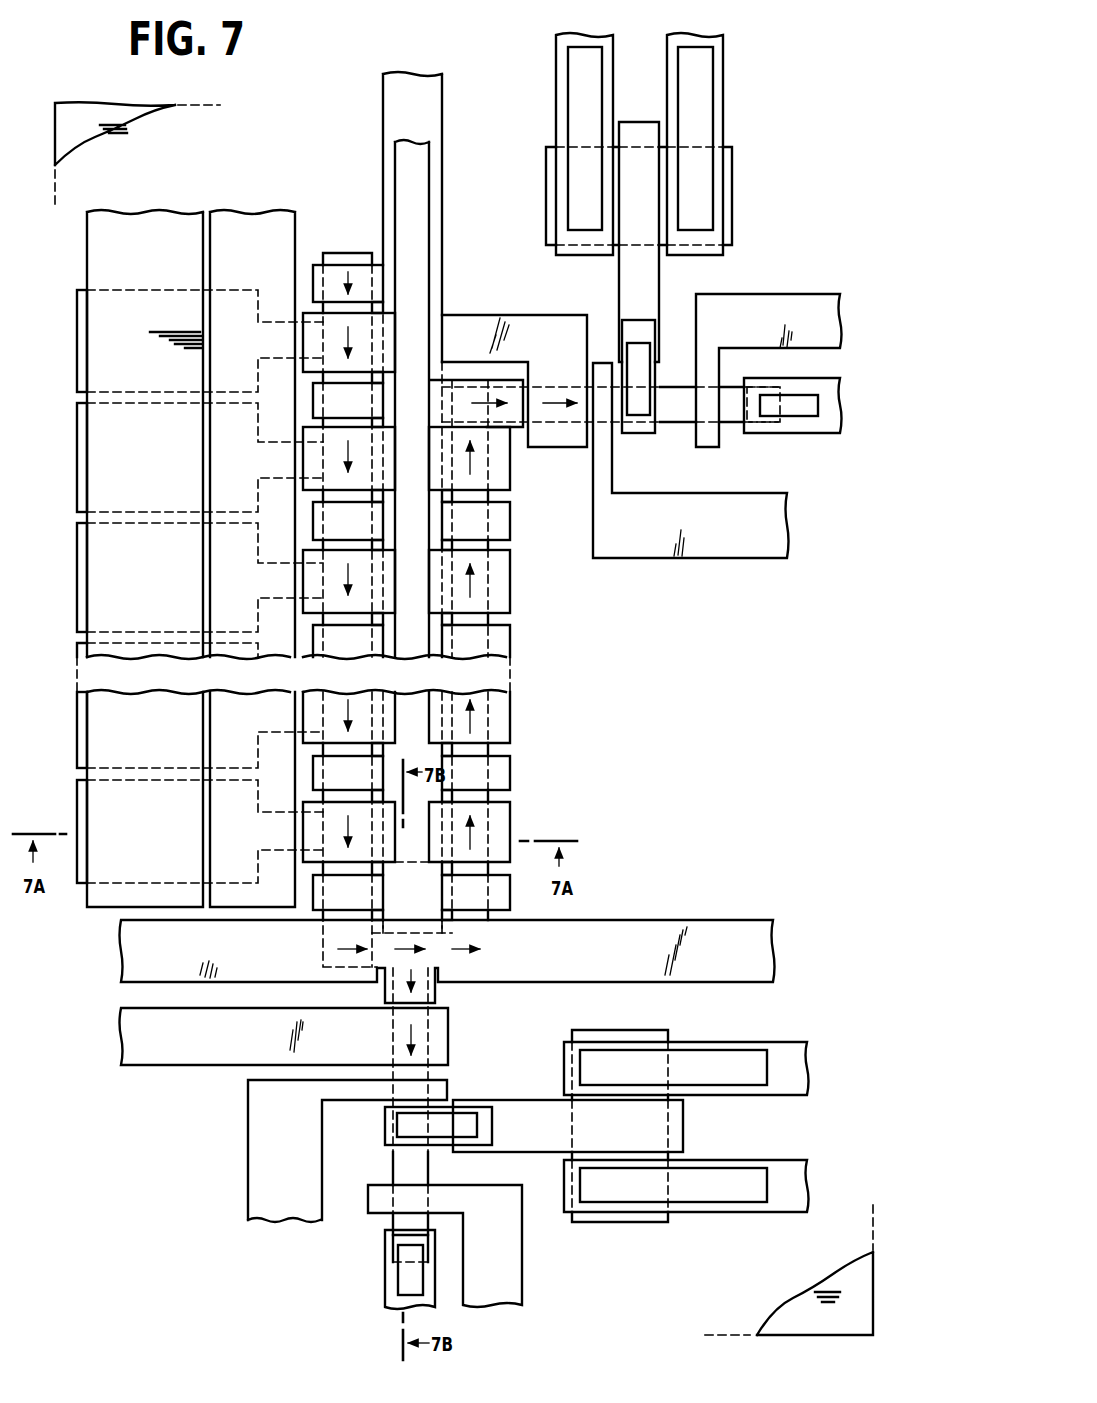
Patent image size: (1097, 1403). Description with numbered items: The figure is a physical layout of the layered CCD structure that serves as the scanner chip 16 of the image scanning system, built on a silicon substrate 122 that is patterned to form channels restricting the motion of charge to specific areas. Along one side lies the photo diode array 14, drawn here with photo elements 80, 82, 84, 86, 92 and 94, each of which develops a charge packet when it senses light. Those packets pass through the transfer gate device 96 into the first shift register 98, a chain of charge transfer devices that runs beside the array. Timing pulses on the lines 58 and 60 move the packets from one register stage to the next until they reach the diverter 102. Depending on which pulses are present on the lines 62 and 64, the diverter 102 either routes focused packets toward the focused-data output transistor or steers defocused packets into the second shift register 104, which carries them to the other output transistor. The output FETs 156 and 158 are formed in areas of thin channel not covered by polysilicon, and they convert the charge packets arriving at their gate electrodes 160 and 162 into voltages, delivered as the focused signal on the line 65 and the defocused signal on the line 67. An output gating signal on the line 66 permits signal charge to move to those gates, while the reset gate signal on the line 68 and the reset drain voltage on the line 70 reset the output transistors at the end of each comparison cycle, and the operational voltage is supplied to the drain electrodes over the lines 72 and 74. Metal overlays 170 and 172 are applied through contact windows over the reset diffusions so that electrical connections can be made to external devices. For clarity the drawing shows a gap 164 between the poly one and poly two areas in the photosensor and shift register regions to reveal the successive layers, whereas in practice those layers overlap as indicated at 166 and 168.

The photo diode array 14 is at (120, 220).
The scanner chip 16 is at (571, 742).
The line for timing signal φ1 58 is at (432, 97).
The line for timing signal φ2 60 is at (425, 178).
The line for timing signal φ1' 62 is at (121, 1035).
The line for timing signal φ1'' 64 is at (780, 952).
The focused output voltage line 65 is at (808, 1069).
The output gating signal line 66 is at (790, 530).
The defocused output voltage line 67 is at (559, 52).
The reset gate signal line 68 is at (845, 326).
The reset drain voltage line 70 is at (845, 409).
The operational voltage line 72 is at (718, 45).
The operational voltage line 74 is at (808, 1186).
The photo element 80 is at (77, 336).
The photo element 82 is at (77, 456).
The photo element 84 is at (77, 576).
The photo element 86 is at (77, 649).
The photo element 92 is at (77, 711).
The photo element 94 is at (77, 790).
The transfer gate device 96 is at (270, 220).
The first shift register 98 is at (355, 253).
The diverter 102 is at (452, 995).
The second shift register 104 is at (529, 615).
The silicon substrate 122 is at (85, 110).
The output FET 156 is at (814, 1126).
The output FET 158 is at (645, 31).
The gate electrode 160 is at (550, 1112).
The gate electrode 162 is at (625, 293).
The gap between poly 1 and poly 2 areas 164 is at (207, 220).
The poly 1 and poly 2 overlap 166 is at (303, 825).
The poly 1 and poly 2 overlap 168 is at (440, 1072).
The metal overlay 170 is at (388, 1125).
The metal overlay 172 is at (387, 1275).